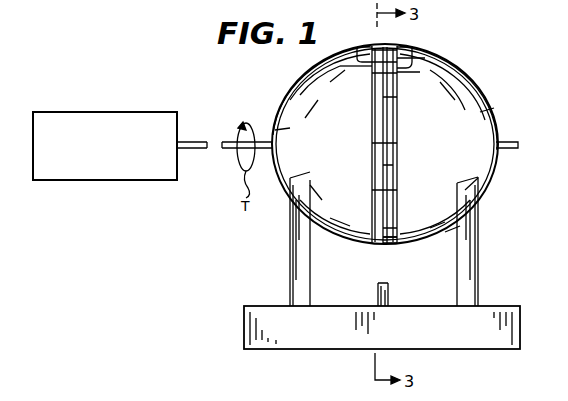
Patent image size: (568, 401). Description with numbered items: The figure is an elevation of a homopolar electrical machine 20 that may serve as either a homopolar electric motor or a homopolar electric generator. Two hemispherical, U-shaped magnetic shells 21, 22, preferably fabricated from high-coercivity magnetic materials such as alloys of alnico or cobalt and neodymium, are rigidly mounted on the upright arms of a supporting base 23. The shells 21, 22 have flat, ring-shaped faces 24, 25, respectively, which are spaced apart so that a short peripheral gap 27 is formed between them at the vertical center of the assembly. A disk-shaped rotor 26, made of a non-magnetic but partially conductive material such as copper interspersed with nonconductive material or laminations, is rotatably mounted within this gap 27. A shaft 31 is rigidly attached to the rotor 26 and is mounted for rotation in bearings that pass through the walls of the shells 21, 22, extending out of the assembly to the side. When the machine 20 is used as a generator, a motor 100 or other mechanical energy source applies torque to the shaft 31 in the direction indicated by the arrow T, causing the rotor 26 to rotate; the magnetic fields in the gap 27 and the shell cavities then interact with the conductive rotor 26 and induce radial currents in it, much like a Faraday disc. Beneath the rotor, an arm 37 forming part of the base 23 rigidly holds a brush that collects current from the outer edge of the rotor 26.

The electrical machine 20 is at (478, 62).
The hemispherical magnetic shell 21 is at (278, 112).
The hemispherical magnetic shell 22 is at (487, 108).
The supporting base 23 is at (332, 306).
The ring-shaped face 24 is at (360, 55).
The ring-shaped face 25 is at (420, 54).
The disk-shaped rotor 26 is at (385, 245).
The peripheral gap 27 is at (395, 45).
The shaft 31 is at (238, 165).
The arm 37 is at (388, 300).
The motor 100 is at (125, 112).